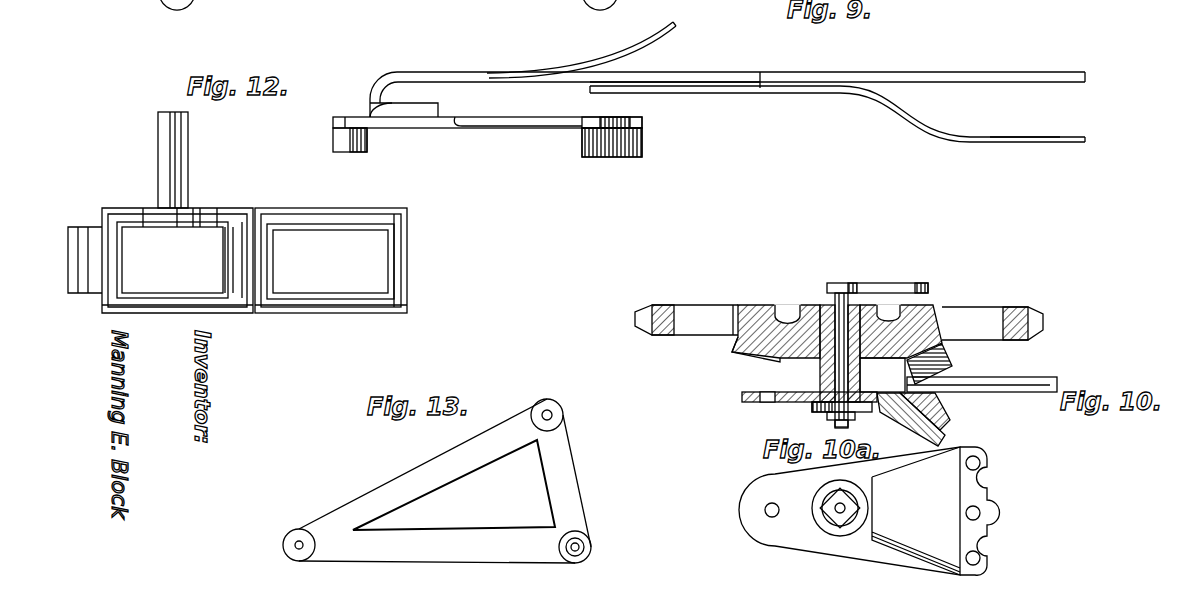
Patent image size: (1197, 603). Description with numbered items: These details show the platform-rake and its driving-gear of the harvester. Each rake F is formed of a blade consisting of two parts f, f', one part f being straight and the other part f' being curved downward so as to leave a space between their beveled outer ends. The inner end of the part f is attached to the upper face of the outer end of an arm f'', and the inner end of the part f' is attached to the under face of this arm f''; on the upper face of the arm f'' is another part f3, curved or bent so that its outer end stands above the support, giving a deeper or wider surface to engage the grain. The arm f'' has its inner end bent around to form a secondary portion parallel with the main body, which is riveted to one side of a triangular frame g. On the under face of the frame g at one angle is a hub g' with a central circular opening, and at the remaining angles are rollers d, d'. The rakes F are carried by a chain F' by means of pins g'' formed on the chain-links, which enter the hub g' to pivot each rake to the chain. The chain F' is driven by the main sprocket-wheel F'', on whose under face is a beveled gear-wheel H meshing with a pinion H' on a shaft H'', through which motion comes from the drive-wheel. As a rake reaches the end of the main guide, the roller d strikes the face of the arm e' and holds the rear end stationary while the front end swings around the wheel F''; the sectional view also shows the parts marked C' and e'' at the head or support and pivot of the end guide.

In FIG. 9, the rake F is at (727, 77).
In FIG. 12, the chain F' is at (237, 250).
In FIG. 10, the main sprocket-wheel F'' is at (839, 311).
In FIG. 9, the straight blade part f is at (837, 96).
In FIG. 9, the curved blade part f' is at (1025, 130).
In FIG. 9, the arm f'' is at (649, 94).
In FIG. 9, the curved rake part f3 is at (612, 46).
In FIG. 9, the triangular frame g is at (487, 136).
In FIG. 13, the triangular frame g is at (445, 481).
In FIG. 9, the hub g' is at (623, 140).
In FIG. 13, the hub g' is at (585, 547).
In FIG. 12, the pin g'' is at (184, 160).
In FIG. 9, the roller d is at (337, 140).
In FIG. 13, the roller d is at (308, 543).
In FIG. 9, the roller d' is at (595, 145).
In FIG. 13, the roller d' is at (561, 415).
In FIG. 10, the beveled gear-wheel H is at (837, 348).
In FIG. 10, the pinion H' is at (940, 364).
In FIG. 10, the shaft H'' is at (982, 374).
In FIG. 10, the lever plate C' is at (930, 419).
In FIG. 10a, the lever plate C' is at (869, 511).
In FIG. 10, the arm e' is at (874, 346).
In FIG. 10, the nut e'' is at (809, 357).
In FIG. 10a, the nut e'' is at (840, 518).